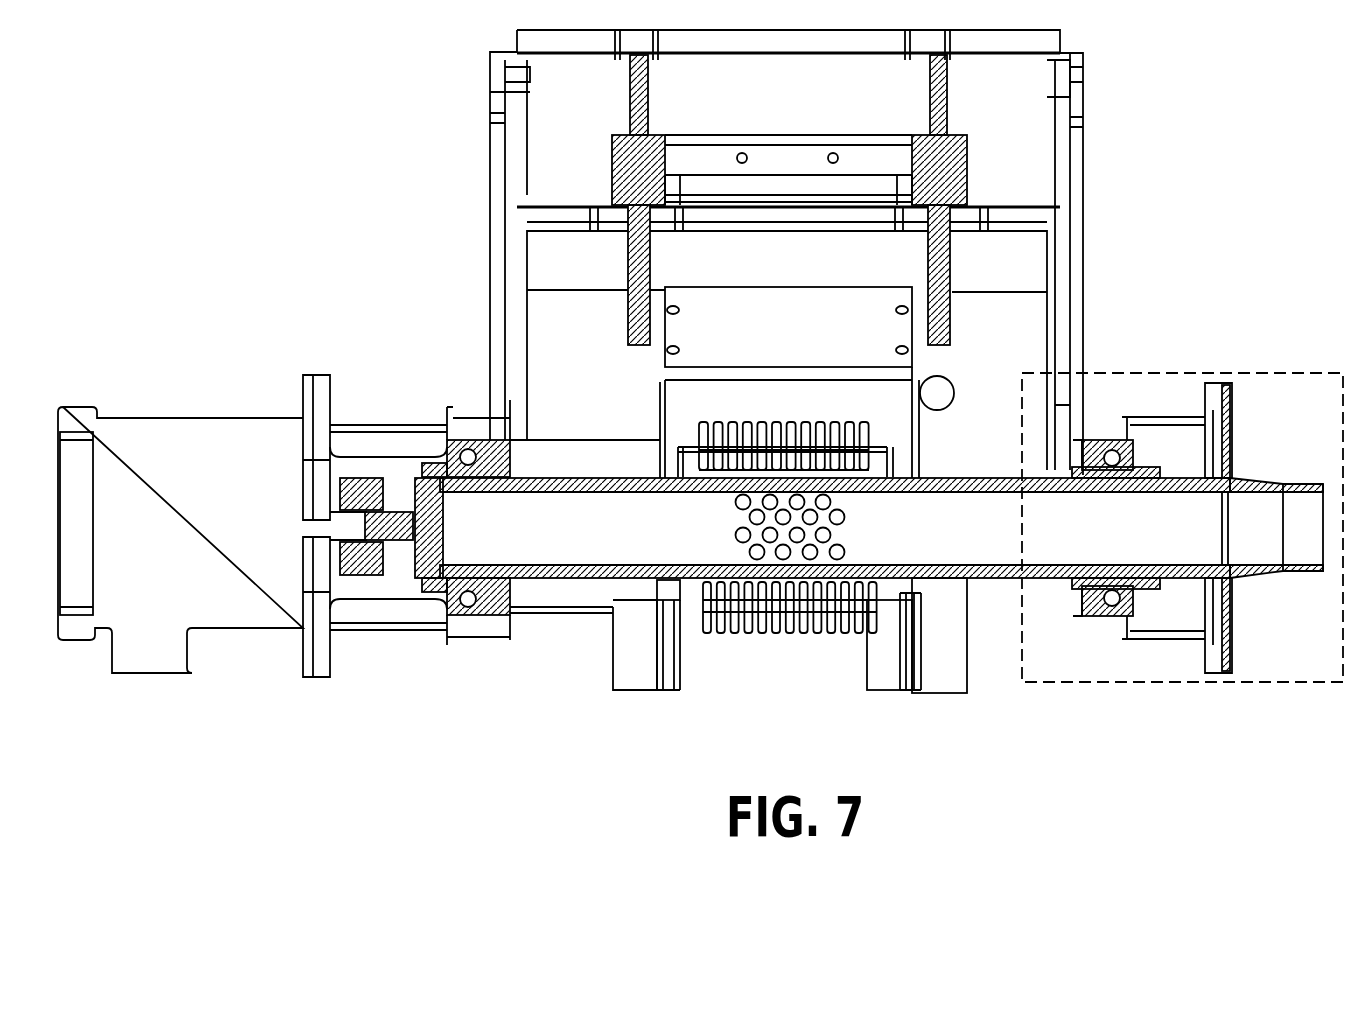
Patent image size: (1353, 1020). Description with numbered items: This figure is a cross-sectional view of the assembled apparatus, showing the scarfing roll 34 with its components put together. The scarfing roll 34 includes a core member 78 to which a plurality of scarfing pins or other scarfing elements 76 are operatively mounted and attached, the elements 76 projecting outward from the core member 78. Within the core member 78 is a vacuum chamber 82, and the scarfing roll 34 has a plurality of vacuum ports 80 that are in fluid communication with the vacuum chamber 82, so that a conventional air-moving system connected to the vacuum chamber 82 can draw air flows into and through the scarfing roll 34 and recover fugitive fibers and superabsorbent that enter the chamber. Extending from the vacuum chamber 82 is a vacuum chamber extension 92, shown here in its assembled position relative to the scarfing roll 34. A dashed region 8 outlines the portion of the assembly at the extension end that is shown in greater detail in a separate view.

The rotary drive assembly (dashed region) 8 is at (1182, 553).
The scarfing roll 34 is at (612, 543).
The scarfing elements 76 is at (757, 633).
The core member 78 is at (533, 536).
The vacuum ports 80 is at (840, 516).
The vacuum chamber 82 is at (958, 536).
The vacuum chamber extension 92 is at (1173, 536).